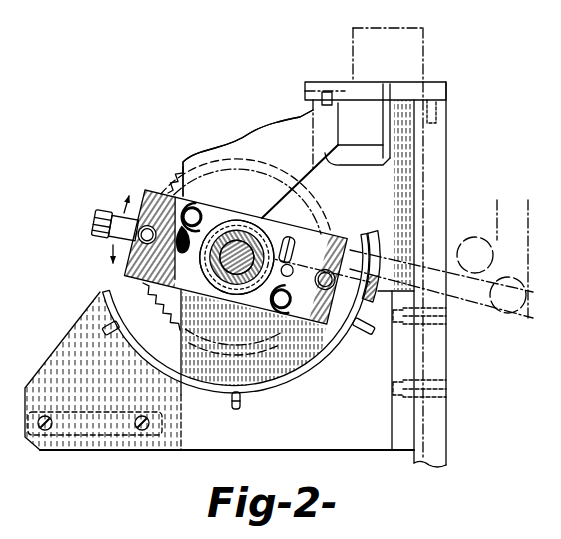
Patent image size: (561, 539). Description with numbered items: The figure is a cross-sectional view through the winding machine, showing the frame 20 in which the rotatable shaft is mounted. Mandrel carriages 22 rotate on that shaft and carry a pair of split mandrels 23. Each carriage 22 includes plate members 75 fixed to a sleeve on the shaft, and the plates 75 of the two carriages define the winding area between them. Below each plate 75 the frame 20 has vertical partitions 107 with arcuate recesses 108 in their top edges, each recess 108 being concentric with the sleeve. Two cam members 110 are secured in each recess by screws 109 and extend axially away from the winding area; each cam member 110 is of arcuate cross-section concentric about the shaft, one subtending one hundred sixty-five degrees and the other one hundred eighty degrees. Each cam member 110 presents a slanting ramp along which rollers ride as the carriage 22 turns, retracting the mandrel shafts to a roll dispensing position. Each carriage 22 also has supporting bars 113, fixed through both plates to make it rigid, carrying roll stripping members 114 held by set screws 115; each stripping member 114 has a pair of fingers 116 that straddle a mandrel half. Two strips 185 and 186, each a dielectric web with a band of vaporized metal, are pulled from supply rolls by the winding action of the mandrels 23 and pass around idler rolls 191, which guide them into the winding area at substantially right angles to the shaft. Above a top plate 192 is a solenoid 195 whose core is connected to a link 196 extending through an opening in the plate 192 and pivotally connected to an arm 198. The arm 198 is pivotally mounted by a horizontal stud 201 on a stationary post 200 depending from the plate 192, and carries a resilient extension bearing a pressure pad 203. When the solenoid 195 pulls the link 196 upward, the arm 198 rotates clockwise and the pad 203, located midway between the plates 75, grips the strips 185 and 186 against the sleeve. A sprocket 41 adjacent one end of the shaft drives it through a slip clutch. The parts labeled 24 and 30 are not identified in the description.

The frame 20 is at (449, 440).
The mandrel carriage 22 is at (239, 246).
The split mandrel 23 is at (135, 258).
The locating pin 24 is at (312, 262).
The upright support 30 is at (402, 183).
The sprocket 41 is at (178, 330).
The plate member 75 is at (254, 247).
The vertical partition 107 is at (350, 446).
The arcuate recess 108 is at (318, 368).
The screw 109 is at (108, 334).
The cam member 110 is at (340, 340).
The supporting bar 113 is at (255, 244).
The roll stripping member 114 is at (263, 247).
The set screw 115 is at (311, 295).
The finger 116 is at (309, 238).
The strip 185 is at (497, 217).
The strip 186 is at (478, 307).
The idler roll 191 is at (494, 254).
The top plate 192 is at (448, 97).
The solenoid 195 is at (417, 53).
The link 196 is at (380, 109).
The arm 198 is at (387, 160).
The stationary post 200 is at (313, 138).
The stud 201 is at (335, 166).
The pressure pad 203 is at (240, 243).